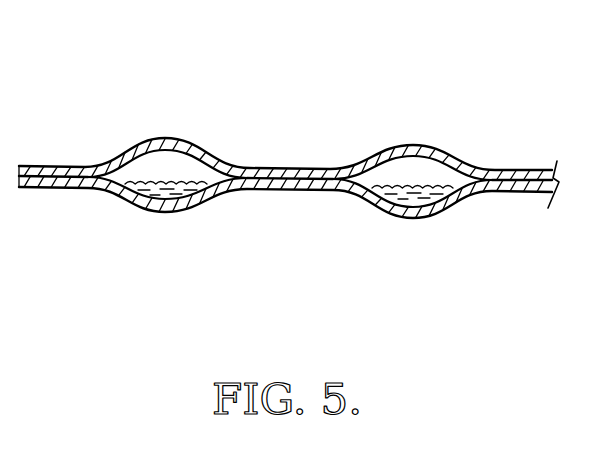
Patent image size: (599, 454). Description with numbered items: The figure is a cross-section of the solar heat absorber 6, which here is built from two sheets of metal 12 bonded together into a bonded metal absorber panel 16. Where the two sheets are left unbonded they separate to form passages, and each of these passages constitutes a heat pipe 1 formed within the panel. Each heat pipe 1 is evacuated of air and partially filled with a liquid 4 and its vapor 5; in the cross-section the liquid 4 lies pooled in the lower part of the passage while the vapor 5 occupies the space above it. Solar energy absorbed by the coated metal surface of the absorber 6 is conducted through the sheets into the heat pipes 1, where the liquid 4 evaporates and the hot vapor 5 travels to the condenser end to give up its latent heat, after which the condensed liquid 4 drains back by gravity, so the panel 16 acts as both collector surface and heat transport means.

The sheets of metal 12 is at (59, 165).
The bonded metal absorber panel 16 is at (281, 165).
The absorber 6 is at (304, 192).
The vapor 5 is at (175, 170).
The liquid 4 is at (180, 193).
The heat pipe 1 is at (417, 169).